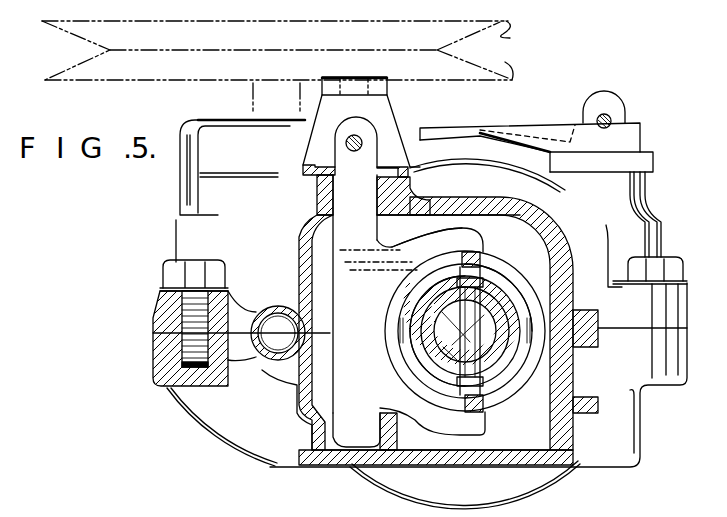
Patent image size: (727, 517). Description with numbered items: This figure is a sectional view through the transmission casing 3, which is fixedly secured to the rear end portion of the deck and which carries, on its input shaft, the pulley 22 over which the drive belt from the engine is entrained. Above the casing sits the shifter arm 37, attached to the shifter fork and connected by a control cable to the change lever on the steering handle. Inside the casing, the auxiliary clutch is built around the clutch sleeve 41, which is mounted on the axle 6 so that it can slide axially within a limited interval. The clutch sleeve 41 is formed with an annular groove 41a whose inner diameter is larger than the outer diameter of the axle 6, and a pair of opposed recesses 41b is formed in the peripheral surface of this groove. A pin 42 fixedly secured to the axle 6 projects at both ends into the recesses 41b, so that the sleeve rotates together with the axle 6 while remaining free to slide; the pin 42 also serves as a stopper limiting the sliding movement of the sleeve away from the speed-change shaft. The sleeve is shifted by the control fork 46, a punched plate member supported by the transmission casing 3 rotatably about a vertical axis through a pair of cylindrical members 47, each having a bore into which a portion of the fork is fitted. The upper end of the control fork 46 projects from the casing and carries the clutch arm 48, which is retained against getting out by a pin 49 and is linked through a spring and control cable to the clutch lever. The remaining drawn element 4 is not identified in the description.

The pulley 22 is at (515, 38).
The transmission casing 3 is at (633, 233).
The pivot boss 4 is at (262, 371).
The axle 6 is at (425, 350).
The shifter arm 37 is at (478, 112).
The clutch sleeve 41 is at (505, 312).
The annular groove 41a is at (495, 348).
The recesses 41b is at (455, 286).
The pin 42 is at (488, 322).
The control fork 46 is at (425, 415).
The cylindrical members 47 is at (315, 198).
The clutch arm 48 is at (408, 165).
The pin 49 is at (345, 141).